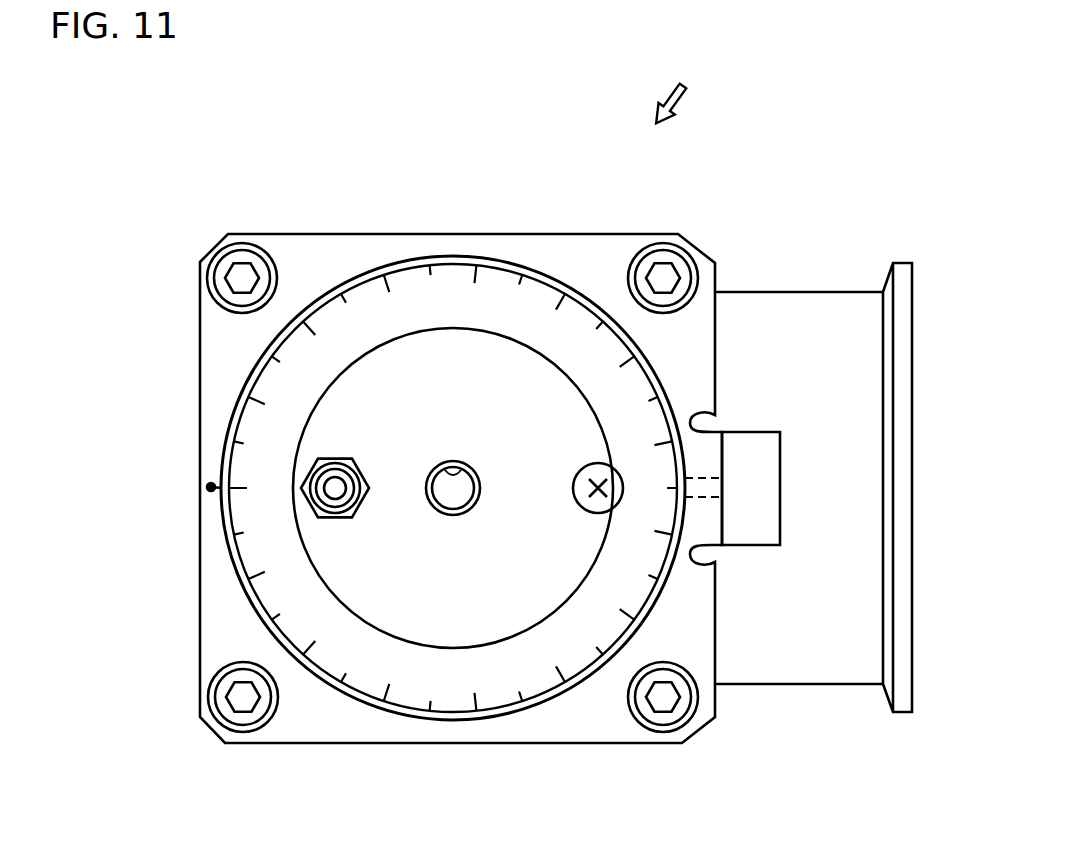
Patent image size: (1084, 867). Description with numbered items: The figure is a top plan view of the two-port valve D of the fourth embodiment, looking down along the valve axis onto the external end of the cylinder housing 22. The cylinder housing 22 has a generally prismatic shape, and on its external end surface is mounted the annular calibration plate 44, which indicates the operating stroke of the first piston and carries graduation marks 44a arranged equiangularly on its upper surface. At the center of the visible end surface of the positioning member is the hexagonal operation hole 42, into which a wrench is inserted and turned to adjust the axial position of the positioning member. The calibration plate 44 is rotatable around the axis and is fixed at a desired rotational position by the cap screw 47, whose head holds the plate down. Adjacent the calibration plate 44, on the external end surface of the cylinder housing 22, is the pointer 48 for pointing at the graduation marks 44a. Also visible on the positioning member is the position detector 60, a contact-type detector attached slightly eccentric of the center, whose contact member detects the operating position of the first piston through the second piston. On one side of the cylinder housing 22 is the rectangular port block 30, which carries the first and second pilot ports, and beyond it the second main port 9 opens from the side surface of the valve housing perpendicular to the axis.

The second main port 9 is at (870, 422).
The cylinder housing 22 is at (318, 712).
The port block 30 is at (752, 507).
The operation hole 42 is at (468, 466).
The calibration plate 44 is at (410, 262).
The graduation marks 44a is at (497, 268).
The cap screw 47 is at (578, 492).
The pointer 48 is at (207, 490).
The position detector 60 is at (305, 480).
The two-port valve D is at (675, 85).